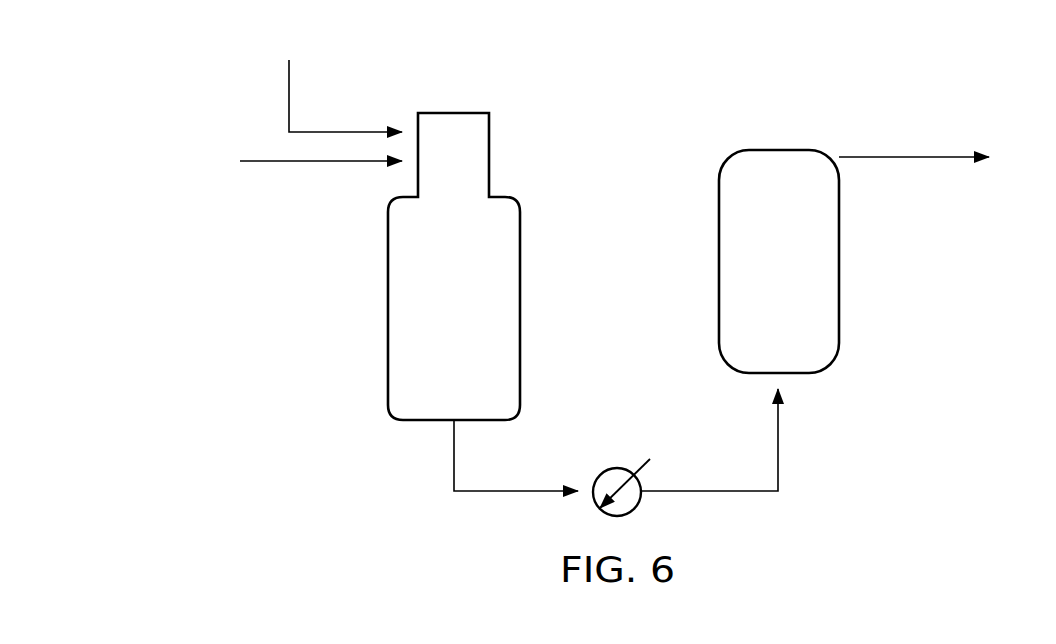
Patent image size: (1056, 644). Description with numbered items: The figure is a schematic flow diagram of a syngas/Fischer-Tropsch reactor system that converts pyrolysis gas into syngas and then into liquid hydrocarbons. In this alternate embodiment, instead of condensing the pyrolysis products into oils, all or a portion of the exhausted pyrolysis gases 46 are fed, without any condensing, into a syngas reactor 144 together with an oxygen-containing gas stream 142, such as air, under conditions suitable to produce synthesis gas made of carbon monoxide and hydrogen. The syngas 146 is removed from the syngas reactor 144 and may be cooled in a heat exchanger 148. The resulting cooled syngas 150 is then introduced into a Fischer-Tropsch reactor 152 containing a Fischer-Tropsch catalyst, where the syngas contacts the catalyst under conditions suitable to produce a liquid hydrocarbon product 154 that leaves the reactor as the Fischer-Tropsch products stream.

The oxygen-containing gas stream 142 is at (347, 130).
The exhausted pyrolysis gases 46 is at (321, 163).
The syngas reactor 144 is at (388, 306).
The syngas 146 is at (521, 493).
The heat exchanger 148 is at (612, 468).
The cooled syngas 150 is at (709, 493).
The Fischer-Tropsch reactor 152 is at (841, 261).
The liquid hydrocarbon product 154 is at (912, 160).